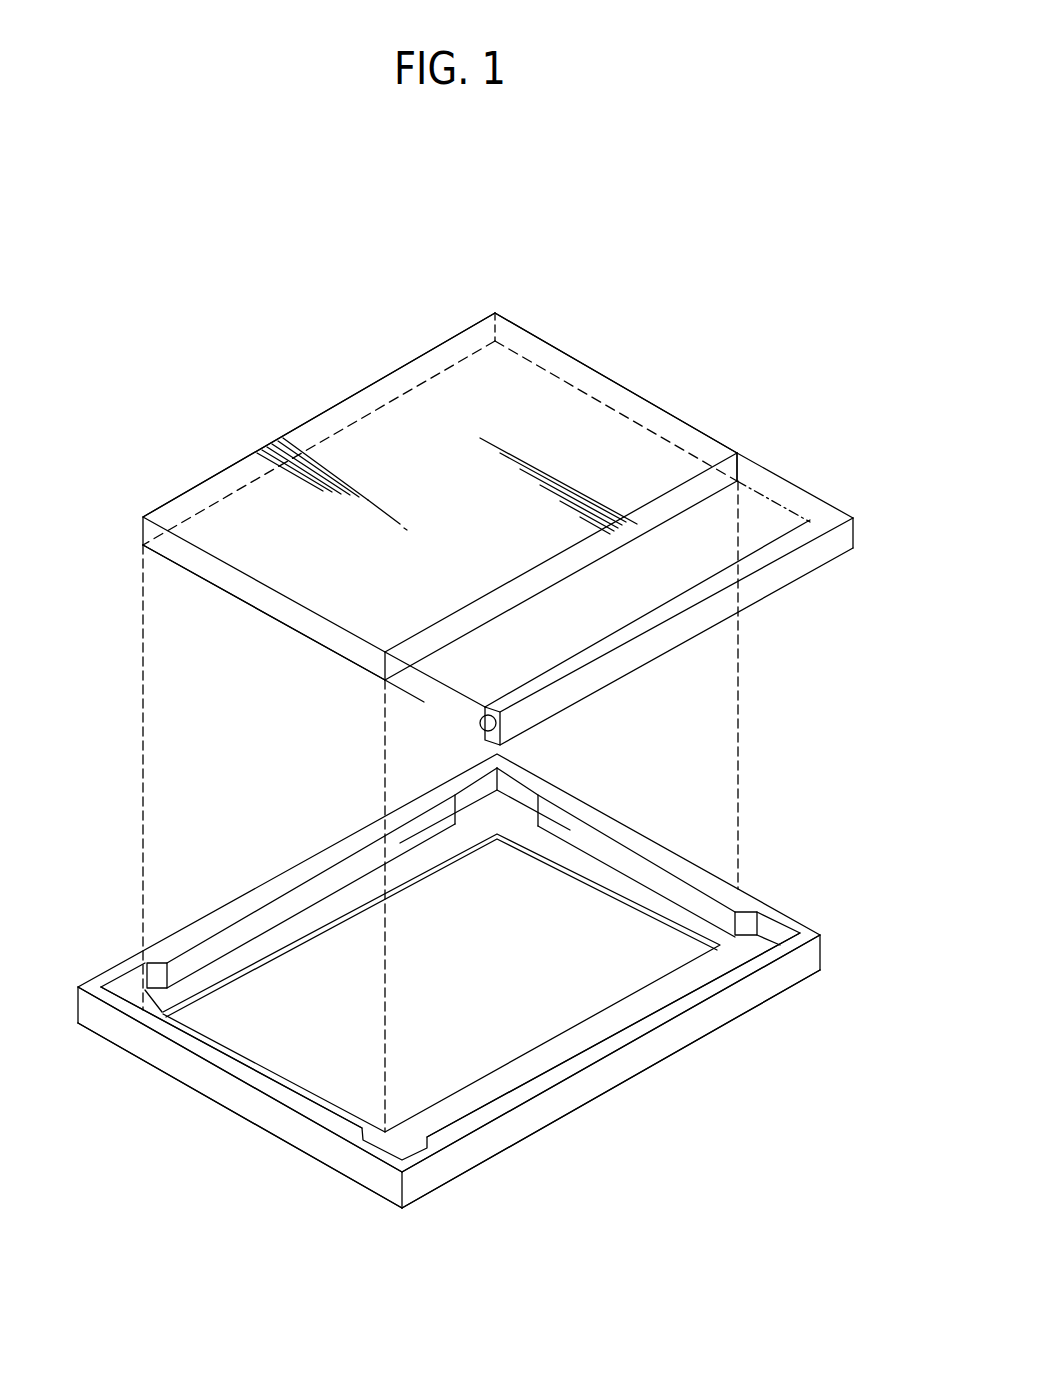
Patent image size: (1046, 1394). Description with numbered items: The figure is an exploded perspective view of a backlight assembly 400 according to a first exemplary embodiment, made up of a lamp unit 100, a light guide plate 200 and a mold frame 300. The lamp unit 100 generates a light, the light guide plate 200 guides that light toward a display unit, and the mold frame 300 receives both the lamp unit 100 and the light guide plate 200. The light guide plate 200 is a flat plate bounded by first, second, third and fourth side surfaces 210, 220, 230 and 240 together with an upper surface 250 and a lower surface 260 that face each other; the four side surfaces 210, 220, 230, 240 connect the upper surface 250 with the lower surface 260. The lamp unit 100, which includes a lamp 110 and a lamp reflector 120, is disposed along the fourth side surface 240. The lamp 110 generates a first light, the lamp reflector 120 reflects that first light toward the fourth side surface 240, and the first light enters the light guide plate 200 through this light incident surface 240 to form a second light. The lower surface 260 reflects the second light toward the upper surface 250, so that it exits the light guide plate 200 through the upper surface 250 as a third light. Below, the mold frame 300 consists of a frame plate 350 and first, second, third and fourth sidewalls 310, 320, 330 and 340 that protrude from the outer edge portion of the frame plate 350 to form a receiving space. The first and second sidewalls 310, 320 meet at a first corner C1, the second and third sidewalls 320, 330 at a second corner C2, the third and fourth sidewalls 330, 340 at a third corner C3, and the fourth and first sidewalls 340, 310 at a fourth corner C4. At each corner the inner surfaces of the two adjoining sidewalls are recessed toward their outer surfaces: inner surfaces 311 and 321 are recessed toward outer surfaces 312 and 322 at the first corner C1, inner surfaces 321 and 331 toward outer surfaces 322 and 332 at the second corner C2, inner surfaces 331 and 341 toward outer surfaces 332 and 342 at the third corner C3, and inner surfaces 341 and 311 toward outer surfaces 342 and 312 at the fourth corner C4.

The lamp unit 100 is at (391, 749).
The lamp 110 is at (490, 738).
The lamp reflector 120 is at (481, 718).
The light guide plate 200 is at (690, 398).
The first side surface 210 is at (276, 609).
The second side surface 220 is at (226, 486).
The third side surface 230 is at (616, 391).
The fourth side surface 240 is at (745, 460).
The upper surface 250 is at (502, 377).
The lower surface 260 is at (408, 430).
The mold frame 300 is at (802, 893).
The first sidewall 310 is at (240, 1099).
The inner surface of the first sidewall 311 is at (338, 1112).
The outer surface of the first sidewall 312 is at (280, 1113).
The second sidewall 320 is at (323, 878).
The inner surface of the second sidewall 321 is at (280, 908).
The outer surface of the second sidewall 322 is at (252, 845).
The third sidewall 330 is at (616, 841).
The inner surface of the third sidewall 331 is at (584, 840).
The outer surface of the third sidewall 332 is at (585, 786).
The fourth sidewall 340 is at (611, 1070).
The inner surface of the fourth sidewall 341 is at (608, 1034).
The outer surface of the fourth sidewall 342 is at (676, 1040).
The frame plate 350 is at (292, 1088).
The backlight assembly 400 is at (472, 266).
The first corner C1 is at (190, 992).
The second corner C2 is at (491, 820).
The third corner C3 is at (712, 946).
The fourth corner C4 is at (410, 1122).